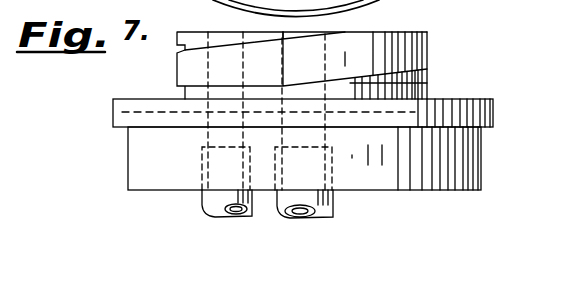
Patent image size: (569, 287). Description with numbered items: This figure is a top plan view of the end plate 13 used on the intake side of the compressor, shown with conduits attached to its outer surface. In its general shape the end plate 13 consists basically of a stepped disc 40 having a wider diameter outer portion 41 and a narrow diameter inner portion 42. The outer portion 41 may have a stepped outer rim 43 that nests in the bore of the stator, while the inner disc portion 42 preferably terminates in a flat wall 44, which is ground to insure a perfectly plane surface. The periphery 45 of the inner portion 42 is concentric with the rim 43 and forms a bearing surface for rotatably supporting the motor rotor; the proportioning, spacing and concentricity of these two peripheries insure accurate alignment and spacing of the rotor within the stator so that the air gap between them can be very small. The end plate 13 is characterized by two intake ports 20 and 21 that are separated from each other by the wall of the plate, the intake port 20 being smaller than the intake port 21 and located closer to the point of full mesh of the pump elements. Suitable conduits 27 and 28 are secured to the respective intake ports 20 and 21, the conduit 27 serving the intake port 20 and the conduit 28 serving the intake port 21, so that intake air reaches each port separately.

The end plate 13 is at (493, 112).
The intake port 20 is at (230, 33).
The intake port 21 is at (305, 33).
The conduit 27 is at (207, 203).
The conduit 28 is at (333, 203).
The stepped disc 40 is at (143, 147).
The outer portion 41 is at (142, 175).
The inner portion 42 is at (428, 47).
The stepped outer rim 43 is at (481, 150).
The flat wall 44 is at (398, 32).
The periphery 45 is at (177, 68).